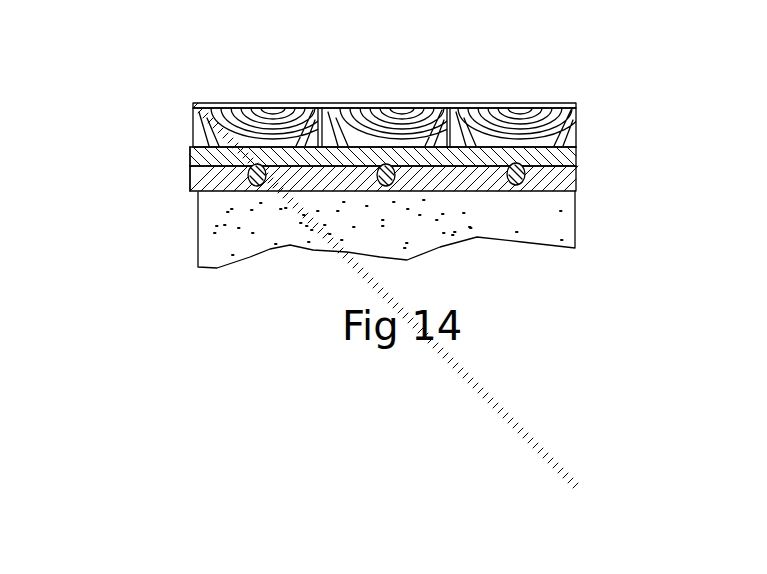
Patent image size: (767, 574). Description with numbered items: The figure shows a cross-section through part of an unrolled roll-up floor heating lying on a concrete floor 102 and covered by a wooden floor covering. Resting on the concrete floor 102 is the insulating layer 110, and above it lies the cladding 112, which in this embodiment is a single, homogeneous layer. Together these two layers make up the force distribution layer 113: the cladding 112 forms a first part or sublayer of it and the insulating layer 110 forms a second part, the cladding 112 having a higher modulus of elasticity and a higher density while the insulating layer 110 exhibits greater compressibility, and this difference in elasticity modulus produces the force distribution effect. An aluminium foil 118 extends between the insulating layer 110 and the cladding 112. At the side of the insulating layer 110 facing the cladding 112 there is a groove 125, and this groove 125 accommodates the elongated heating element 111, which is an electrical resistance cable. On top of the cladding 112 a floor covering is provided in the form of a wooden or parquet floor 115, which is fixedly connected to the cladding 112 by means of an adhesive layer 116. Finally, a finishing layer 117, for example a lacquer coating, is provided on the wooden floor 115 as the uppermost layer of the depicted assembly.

The concrete floor 102 is at (594, 224).
The insulating layer 110 is at (594, 186).
The elongated heating element 111 is at (516, 164).
The cladding 112 is at (594, 159).
The force distribution layer 113 is at (594, 167).
The wooden floor 115 is at (594, 129).
The adhesive layer 116 is at (594, 149).
The finishing layer 117 is at (535, 102).
The aluminium foil 118 is at (180, 171).
The groove 125 is at (378, 182).